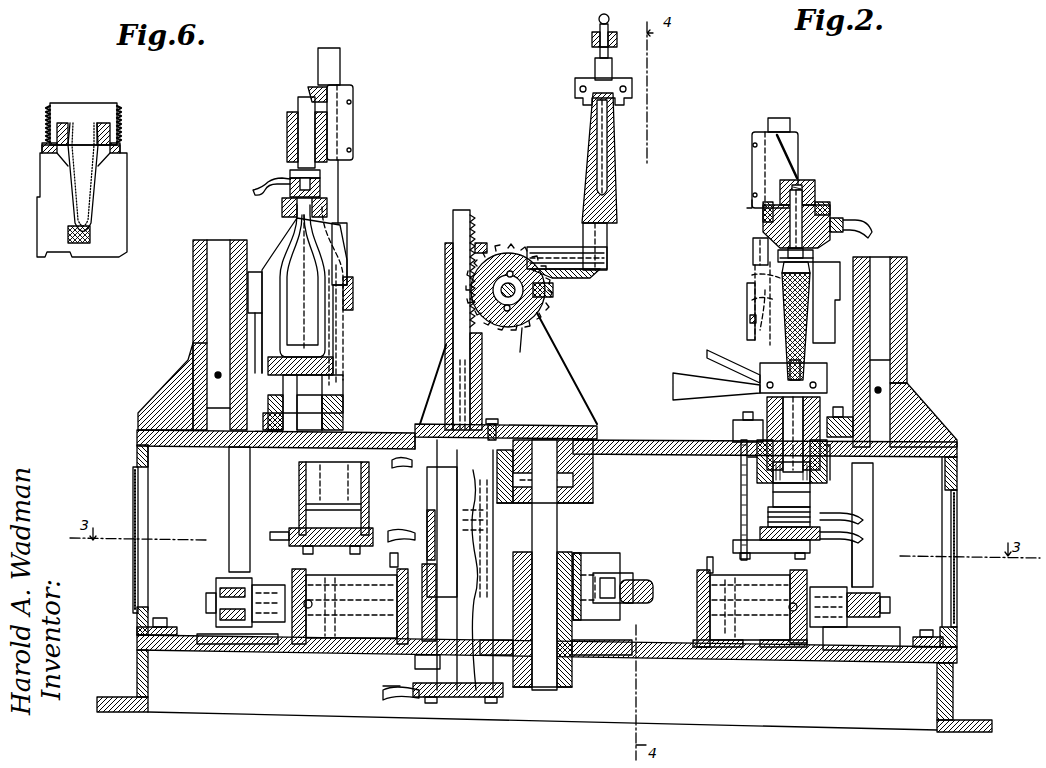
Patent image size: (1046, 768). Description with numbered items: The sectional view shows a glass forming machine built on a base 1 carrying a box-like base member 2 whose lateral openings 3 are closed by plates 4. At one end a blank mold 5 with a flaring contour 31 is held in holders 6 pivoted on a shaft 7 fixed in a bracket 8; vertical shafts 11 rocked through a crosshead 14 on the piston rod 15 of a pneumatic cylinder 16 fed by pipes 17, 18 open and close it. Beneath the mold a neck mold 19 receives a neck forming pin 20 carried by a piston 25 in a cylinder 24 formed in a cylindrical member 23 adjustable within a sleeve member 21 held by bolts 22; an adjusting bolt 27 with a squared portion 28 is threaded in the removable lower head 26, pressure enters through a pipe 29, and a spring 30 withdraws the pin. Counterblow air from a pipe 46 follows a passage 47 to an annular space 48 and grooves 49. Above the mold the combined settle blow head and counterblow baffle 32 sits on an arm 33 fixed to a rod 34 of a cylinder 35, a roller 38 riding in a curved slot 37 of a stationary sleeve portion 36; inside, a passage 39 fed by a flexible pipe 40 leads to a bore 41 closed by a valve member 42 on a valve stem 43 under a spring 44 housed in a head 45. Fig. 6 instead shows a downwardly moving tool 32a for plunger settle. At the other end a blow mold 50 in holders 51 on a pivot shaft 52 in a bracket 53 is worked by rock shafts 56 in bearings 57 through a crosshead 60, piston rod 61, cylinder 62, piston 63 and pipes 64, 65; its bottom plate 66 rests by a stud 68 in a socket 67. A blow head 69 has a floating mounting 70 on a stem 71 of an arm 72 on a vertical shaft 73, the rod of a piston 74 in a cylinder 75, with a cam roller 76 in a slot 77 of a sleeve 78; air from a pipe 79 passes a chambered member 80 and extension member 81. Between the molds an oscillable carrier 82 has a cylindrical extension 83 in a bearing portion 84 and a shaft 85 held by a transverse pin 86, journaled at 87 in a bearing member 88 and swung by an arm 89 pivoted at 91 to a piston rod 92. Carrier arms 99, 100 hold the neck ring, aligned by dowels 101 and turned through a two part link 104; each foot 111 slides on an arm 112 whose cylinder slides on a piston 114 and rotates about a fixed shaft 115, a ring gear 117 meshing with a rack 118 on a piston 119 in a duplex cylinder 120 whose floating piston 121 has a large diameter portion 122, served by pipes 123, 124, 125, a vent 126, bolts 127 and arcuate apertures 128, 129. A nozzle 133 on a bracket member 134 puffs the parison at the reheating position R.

In FIG. 2, the base 1 is at (953, 692).
In FIG. 2, the base member 2 is at (957, 448).
In FIG. 2, the lateral openings 3 is at (137, 480).
In FIG. 2, the plates 4 is at (133, 568).
In FIG. 6, the blank mold 5 is at (127, 170).
In FIG. 2, the blank mold 5 is at (753, 262).
In FIG. 2, the holders 6 is at (882, 298).
In FIG. 2, the pivotal shaft 7 is at (900, 320).
In FIG. 2, the bracket 8 is at (925, 420).
In FIG. 2, the vertical shafts 11 is at (873, 500).
In FIG. 2, the crosshead 14 is at (872, 605).
In FIG. 2, the piston rod 15 is at (740, 615).
In FIG. 2, the pneumatic cylinder 16 is at (800, 578).
In FIG. 2, the pipe 17 is at (708, 558).
In FIG. 2, the pipe 18 is at (794, 612).
In FIG. 2, the neck mold 19 is at (580, 98).
In FIG. 2, the neck forming pin 20 is at (800, 382).
In FIG. 2, the sleeve member 21 is at (830, 470).
In FIG. 2, the bolts 22 is at (848, 432).
In FIG. 2, the cylindrical member 23 is at (740, 495).
In FIG. 2, the cylinder 24 is at (765, 512).
In FIG. 2, the piston 25 is at (802, 496).
In FIG. 2, the lower head 26 is at (857, 547).
In FIG. 2, the adjusting bolt 27 is at (740, 470).
In FIG. 2, the squared portion 28 is at (733, 427).
In FIG. 2, the pipe 29 is at (865, 536).
In FIG. 2, the spring 30 is at (757, 473).
In FIG. 2, the flaring contour 31 is at (806, 250).
In FIG. 2, the combined settle blow head and counterblow baffle 32 is at (765, 218).
In FIG. 6, the downwardly moving tool 32a is at (83, 197).
In FIG. 2, the arm 33 is at (800, 165).
In FIG. 2, the vertical rod 34 is at (790, 125).
In FIG. 2, the pneumatic cylinder 35 is at (735, 523).
In FIG. 2, the stationary sleeve portion 36 is at (750, 330).
In FIG. 2, the curved slot 37 is at (752, 279).
In FIG. 2, the roller 38 is at (752, 300).
In FIG. 2, the passage 39 is at (838, 218).
In FIG. 2, the flexible pipe 40 is at (862, 222).
In FIG. 2, the vertical bore 41 is at (768, 240).
In FIG. 2, the valve member 42 is at (815, 258).
In FIG. 2, the valve stem 43 is at (832, 208).
In FIG. 2, the helical compression spring 44 is at (815, 195).
In FIG. 2, the head 45 is at (780, 182).
In FIG. 2, the pipe 46 is at (865, 515).
In FIG. 2, the passage 47 is at (830, 478).
In FIG. 2, the annular space 48 is at (770, 416).
In FIG. 2, the grooves 49 is at (820, 418).
In FIG. 2, the blow mold 50 is at (322, 228).
In FIG. 2, the holder 51 is at (255, 272).
In FIG. 2, the pivot shaft 52 is at (215, 260).
In FIG. 2, the bracket 53 is at (175, 385).
In FIG. 2, the vertical rock shafts 56 is at (228, 492).
In FIG. 2, the bearings 57 is at (218, 580).
In FIG. 2, the crosshead 60 is at (220, 613).
In FIG. 2, the piston rod 61 is at (222, 590).
In FIG. 2, the pneumatic cylinder 62 is at (338, 620).
In FIG. 2, the piston 63 is at (383, 694).
In FIG. 2, the pipe 64 is at (272, 588).
In FIG. 2, the pipe 65 is at (392, 553).
In FIG. 2, the bottom plate 66 is at (322, 384).
In FIG. 2, the socket 67 is at (330, 407).
In FIG. 2, the stud 68 is at (278, 412).
In FIG. 2, the blow head 69 is at (329, 208).
In FIG. 2, the floating mounting 70 is at (292, 192).
In FIG. 2, the stem 71 is at (298, 125).
In FIG. 2, the arm 72 is at (320, 95).
In FIG. 2, the vertical shaft 73 is at (336, 62).
In FIG. 2, the piston 74 is at (298, 503).
In FIG. 2, the pneumatic cylinder 75 is at (299, 475).
In FIG. 2, the cam roller 76 is at (355, 297).
In FIG. 2, the curved slot 77 is at (347, 265).
In FIG. 2, the sleeve 78 is at (349, 240).
In FIG. 2, the flexible pipe 79 is at (262, 180).
In FIG. 2, the chambered member 80 is at (322, 180).
In FIG. 2, the extension member 81 is at (322, 190).
In FIG. 2, the oscillable carrier 82 is at (588, 425).
In FIG. 2, the cylindrical extension 83 is at (593, 480).
In FIG. 2, the bearing portion 84 is at (595, 500).
In FIG. 2, the vertical shaft 85 is at (557, 498).
In FIG. 2, the transverse pin 86 is at (520, 508).
In FIG. 2, the journal 87 is at (572, 672).
In FIG. 2, the bearing member 88 is at (520, 688).
In FIG. 2, the arm 89 is at (585, 562).
In FIG. 2, the pivot 91 is at (618, 574).
In FIG. 2, the piston rod 92 is at (648, 588).
In FIG. 2, the carrier arm 99 is at (680, 380).
In FIG. 2, the carrier arm 100 is at (609, 240).
In FIG. 2, the dowels 101 is at (580, 89).
In FIG. 2, the adjustable two part link 104 is at (720, 362).
In FIG. 2, the foot 111 is at (572, 250).
In FIG. 2, the arm 112 is at (578, 280).
In FIG. 2, the piston 114 is at (503, 255).
In FIG. 2, the fixed shaft 115 is at (493, 322).
In FIG. 2, the segmental ring gear 117 is at (525, 346).
In FIG. 2, the vertical rack 118 is at (455, 214).
In FIG. 2, the piston 119 is at (437, 500).
In FIG. 2, the duplex air cylinder 120 is at (495, 552).
In FIG. 2, the second piston 121 is at (428, 572).
In FIG. 2, the large diameter portion 122 is at (430, 598).
In FIG. 2, the pipe 123 is at (400, 690).
In FIG. 2, the pipe 124 is at (398, 533).
In FIG. 2, the pipe 125 is at (392, 466).
In FIG. 2, the vent 126 is at (415, 640).
In FIG. 2, the bolts 127 is at (494, 428).
In FIG. 2, the arcuate apertures 128 is at (414, 661).
In FIG. 2, the arcuate apertures 129 is at (417, 428).
In FIG. 2, the nozzle 133 is at (598, 56).
In FIG. 2, the adjustable length bracket member 134 is at (595, 36).
In FIG. 2, the intermediate position R is at (586, 175).